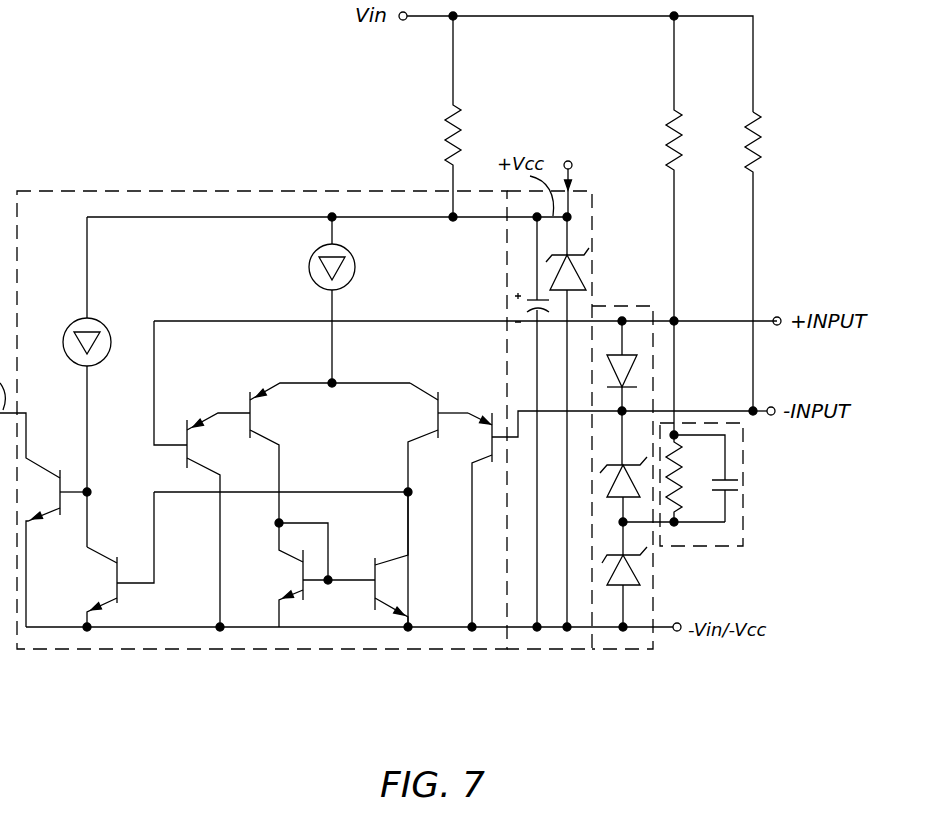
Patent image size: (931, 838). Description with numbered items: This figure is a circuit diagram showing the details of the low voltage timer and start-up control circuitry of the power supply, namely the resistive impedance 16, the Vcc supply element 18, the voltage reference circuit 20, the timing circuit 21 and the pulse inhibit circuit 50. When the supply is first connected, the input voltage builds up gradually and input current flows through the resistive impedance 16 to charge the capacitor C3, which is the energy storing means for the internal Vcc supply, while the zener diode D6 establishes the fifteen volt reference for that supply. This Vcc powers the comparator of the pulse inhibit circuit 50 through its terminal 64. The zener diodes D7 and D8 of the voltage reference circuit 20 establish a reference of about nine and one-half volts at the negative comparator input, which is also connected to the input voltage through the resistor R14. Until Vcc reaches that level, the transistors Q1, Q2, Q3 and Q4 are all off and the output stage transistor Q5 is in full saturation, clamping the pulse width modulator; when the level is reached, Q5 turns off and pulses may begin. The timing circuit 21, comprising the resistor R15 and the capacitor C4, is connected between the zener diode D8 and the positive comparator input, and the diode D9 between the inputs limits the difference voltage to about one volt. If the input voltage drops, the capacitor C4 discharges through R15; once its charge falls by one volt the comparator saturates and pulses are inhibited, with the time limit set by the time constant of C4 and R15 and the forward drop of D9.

The resistive impedance 16 is at (450, 136).
The terminal 64 is at (452, 222).
The pulse inhibit circuit 50 is at (100, 191).
The low voltage timer and start up control circuit element 18 is at (590, 192).
The voltage reference circuit 20 is at (622, 308).
The timing circuit 21 is at (745, 535).
The resistor R14 is at (776, 261).
The resistor R15 is at (674, 478).
The capacitor C3 is at (525, 302).
The timing capacitor C4 is at (740, 485).
The zener diode D6 is at (585, 277).
The zener diode D7 is at (617, 468).
The zener diode D8 is at (642, 578).
The diode D9 is at (640, 372).
The transistor Q1 is at (433, 507).
The transistor Q2 is at (602, 521).
The transistor Q3 is at (398, 559).
The transistor Q4 is at (93, 589).
The output stage transistor Q5 is at (45, 505).